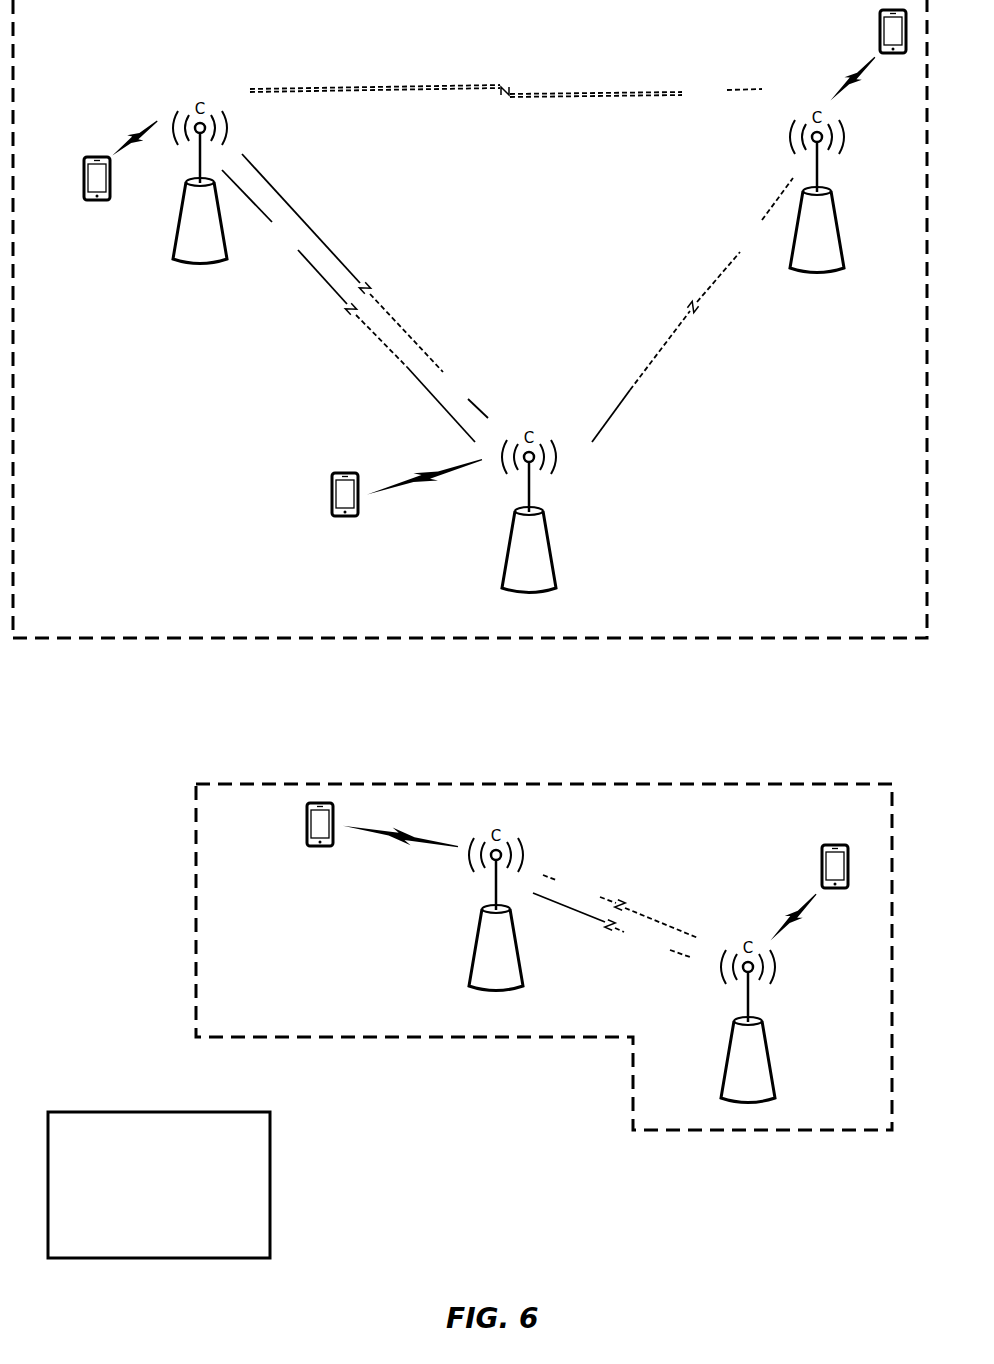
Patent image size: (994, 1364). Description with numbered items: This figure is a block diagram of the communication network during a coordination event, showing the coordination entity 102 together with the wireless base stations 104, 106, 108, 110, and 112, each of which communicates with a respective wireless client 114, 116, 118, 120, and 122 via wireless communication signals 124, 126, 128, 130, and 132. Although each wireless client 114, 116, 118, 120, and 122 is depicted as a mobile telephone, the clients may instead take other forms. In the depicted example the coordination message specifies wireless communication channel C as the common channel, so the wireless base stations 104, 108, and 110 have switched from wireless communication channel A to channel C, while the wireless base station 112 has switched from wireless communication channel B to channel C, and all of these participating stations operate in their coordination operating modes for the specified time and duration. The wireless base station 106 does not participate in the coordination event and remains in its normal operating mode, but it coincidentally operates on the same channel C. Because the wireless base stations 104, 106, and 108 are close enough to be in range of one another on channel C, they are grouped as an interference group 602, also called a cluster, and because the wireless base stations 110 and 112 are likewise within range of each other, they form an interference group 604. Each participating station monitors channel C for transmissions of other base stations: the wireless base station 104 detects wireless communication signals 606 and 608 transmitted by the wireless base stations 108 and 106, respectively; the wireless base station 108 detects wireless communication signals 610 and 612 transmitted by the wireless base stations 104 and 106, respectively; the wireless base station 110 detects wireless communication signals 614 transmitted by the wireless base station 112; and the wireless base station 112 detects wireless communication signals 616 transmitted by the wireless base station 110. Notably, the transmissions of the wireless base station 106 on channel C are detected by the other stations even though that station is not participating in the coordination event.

The coordination entity 102 is at (141, 1226).
The wireless base station 104 is at (176, 233).
The wireless base station 106 is at (841, 236).
The wireless base station 108 is at (505, 565).
The wireless base station 110 is at (470, 960).
The wireless base station 112 is at (725, 1068).
The wireless client 114 is at (84, 182).
The wireless client 116 is at (880, 28).
The wireless client 118 is at (332, 496).
The wireless client 120 is at (307, 824).
The wireless client 122 is at (822, 866).
The wireless communication signals 124 is at (118, 147).
The wireless communication signals 126 is at (862, 78).
The wireless communication signals 128 is at (388, 485).
The wireless communication signals 130 is at (367, 827).
The wireless communication signals 132 is at (800, 916).
The interference group 602 is at (64, 617).
The interference group 604 is at (239, 1032).
The wireless communication signals 606 is at (365, 286).
The wireless communication signals 608 is at (506, 94).
The wireless communication signals 610 is at (348, 306).
The wireless communication signals 612 is at (692, 310).
The wireless communication signals 614 is at (611, 925).
The wireless communication signals 616 is at (620, 906).